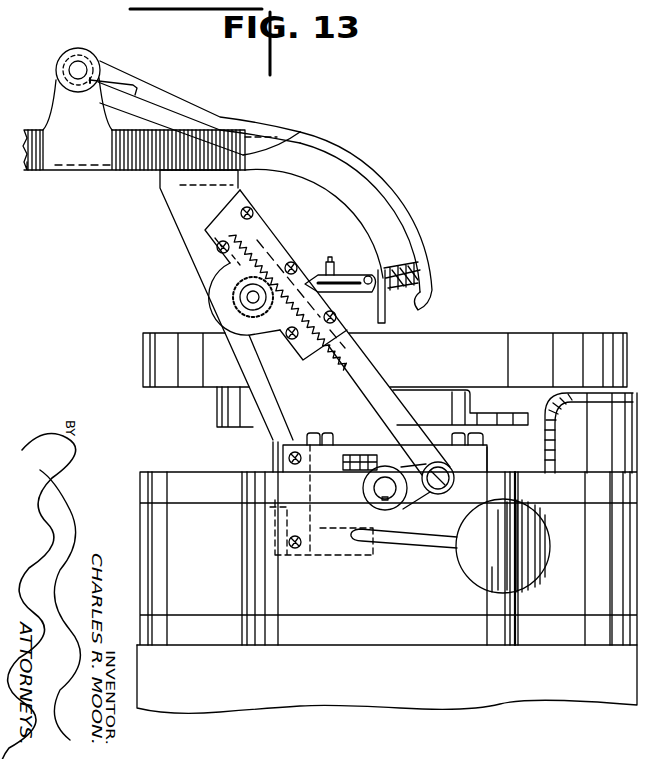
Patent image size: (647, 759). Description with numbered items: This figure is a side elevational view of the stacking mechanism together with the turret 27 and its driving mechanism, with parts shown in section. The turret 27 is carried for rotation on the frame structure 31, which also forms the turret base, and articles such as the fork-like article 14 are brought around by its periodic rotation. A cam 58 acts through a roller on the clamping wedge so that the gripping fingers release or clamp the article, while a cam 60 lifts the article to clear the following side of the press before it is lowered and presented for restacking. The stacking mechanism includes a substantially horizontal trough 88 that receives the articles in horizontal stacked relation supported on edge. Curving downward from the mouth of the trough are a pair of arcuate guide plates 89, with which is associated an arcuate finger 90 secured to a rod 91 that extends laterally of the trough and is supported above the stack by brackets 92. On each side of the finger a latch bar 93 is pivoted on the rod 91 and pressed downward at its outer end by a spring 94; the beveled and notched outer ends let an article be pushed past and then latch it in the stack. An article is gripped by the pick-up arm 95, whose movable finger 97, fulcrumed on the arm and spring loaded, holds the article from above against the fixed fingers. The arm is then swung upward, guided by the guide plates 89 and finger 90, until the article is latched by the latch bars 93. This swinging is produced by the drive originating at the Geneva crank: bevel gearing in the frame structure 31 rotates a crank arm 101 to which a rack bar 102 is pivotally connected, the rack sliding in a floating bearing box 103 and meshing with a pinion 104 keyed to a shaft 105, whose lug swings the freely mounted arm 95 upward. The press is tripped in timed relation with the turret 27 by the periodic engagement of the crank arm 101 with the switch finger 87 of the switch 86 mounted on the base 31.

The article 14 is at (143, 160).
The turret 27 is at (475, 343).
The frame structure 31 is at (195, 513).
The cam 58 is at (417, 430).
The cam 60 is at (589, 519).
The switch 86 is at (503, 546).
The switch finger 87 is at (437, 543).
The trough 88 is at (38, 172).
The arcuate guide plates 89 is at (357, 213).
The arcuate finger 90 is at (340, 147).
The rod 91 is at (77, 67).
The brackets 92 is at (62, 108).
The latch bar 93 is at (203, 110).
The springs 94 is at (130, 83).
The pick-up arm 95 is at (325, 274).
The movable finger 97 is at (353, 294).
The crank arm 101 is at (408, 497).
The rack bar 102 is at (343, 370).
The floating bearing box 103 is at (213, 226).
The pinion 104 is at (245, 291).
The shaft 105 is at (240, 301).